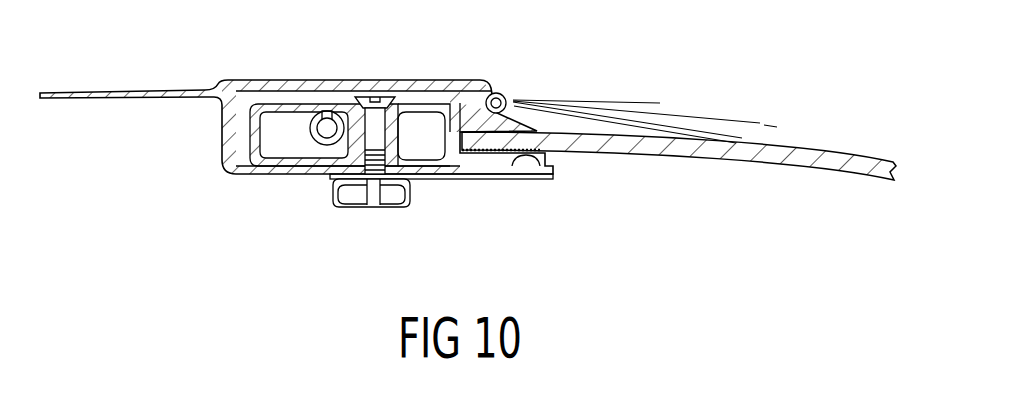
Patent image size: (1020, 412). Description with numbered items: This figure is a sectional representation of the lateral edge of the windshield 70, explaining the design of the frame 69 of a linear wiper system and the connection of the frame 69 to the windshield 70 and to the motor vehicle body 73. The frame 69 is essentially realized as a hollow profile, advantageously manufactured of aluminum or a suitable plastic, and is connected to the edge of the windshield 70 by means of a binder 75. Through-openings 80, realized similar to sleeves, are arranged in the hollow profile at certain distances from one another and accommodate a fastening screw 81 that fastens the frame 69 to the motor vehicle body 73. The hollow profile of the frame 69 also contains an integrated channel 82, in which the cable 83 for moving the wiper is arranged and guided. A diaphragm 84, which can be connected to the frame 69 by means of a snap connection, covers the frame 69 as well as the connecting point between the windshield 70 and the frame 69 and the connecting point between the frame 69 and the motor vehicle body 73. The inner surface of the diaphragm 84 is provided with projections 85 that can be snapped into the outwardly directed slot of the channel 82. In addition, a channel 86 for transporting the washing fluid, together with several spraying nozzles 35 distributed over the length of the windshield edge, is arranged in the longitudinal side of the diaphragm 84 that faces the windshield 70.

The motor vehicle body 73 is at (222, 135).
The diaphragm 84 is at (408, 82).
The channel 86 is at (498, 93).
The spraying nozzles 35 is at (512, 100).
The windshield 70 is at (780, 150).
The projections 85 is at (327, 118).
The integrated channel 82 is at (323, 133).
The cable 83 is at (324, 137).
The fastening screw 81 is at (372, 165).
The through-openings 80 is at (400, 137).
The frame 69 is at (412, 110).
The binder 75 is at (503, 155).